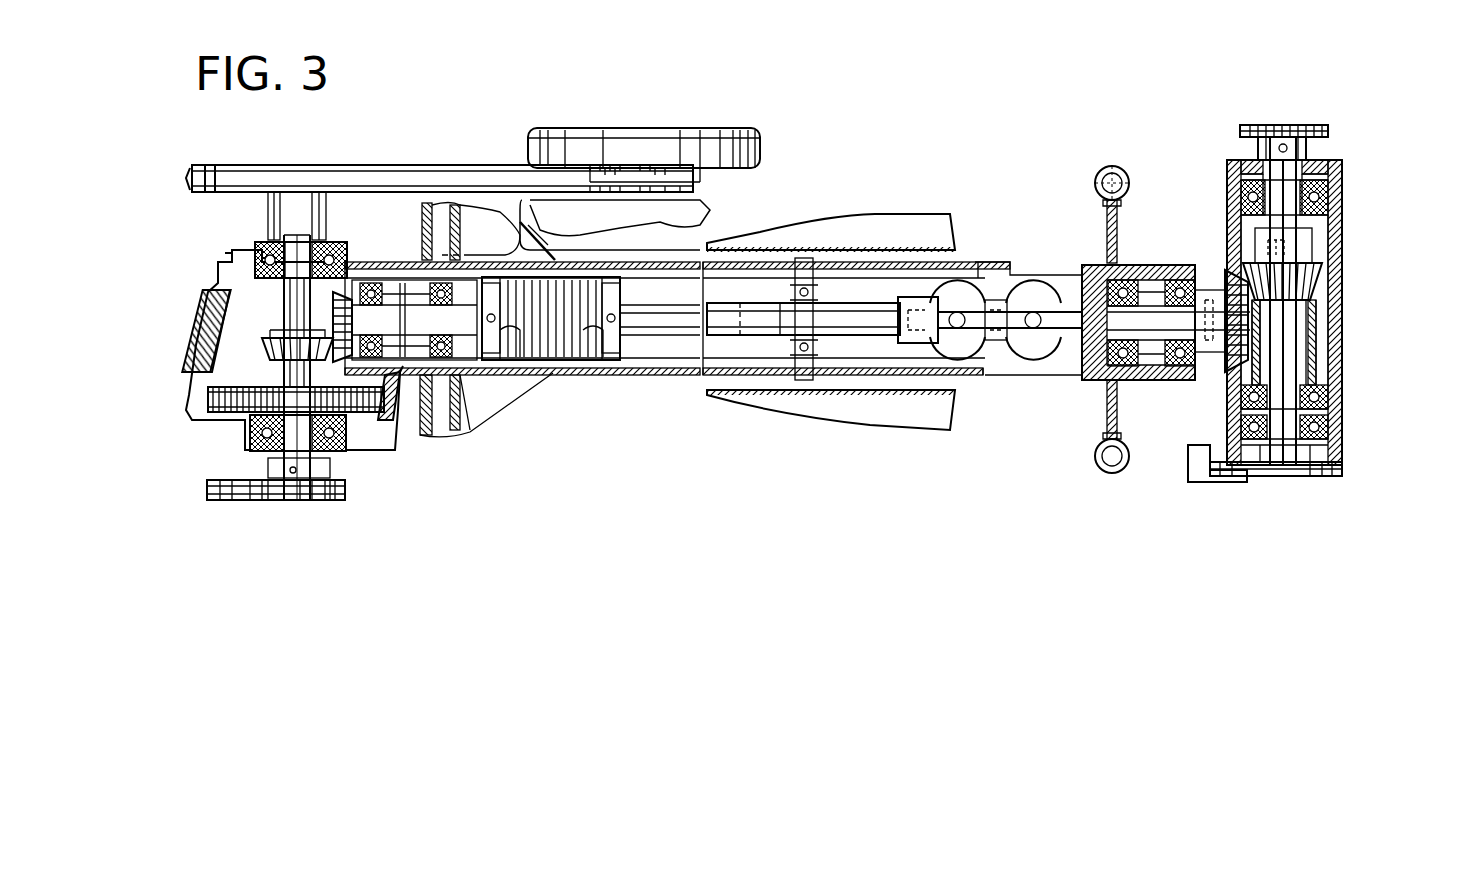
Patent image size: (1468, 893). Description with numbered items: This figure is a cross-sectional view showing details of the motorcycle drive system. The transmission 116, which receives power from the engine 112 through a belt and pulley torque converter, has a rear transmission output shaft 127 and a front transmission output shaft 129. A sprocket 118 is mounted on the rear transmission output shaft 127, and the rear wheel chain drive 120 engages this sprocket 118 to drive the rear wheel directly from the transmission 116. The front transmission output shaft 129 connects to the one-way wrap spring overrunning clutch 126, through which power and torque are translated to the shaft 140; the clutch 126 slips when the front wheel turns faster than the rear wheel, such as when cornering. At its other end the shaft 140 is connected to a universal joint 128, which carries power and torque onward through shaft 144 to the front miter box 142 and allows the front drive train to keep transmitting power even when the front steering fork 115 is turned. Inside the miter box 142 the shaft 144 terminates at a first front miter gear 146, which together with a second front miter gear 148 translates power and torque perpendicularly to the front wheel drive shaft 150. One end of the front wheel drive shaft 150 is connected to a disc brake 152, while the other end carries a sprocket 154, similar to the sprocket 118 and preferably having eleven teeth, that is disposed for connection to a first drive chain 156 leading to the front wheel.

The engine 112 is at (628, 148).
The front steering fork weldment 115 is at (1108, 166).
The transmission 116 is at (205, 333).
The sprocket 118 is at (302, 500).
The rear wheel chain drive 120 is at (212, 492).
The one-way wrap spring overrunning clutch 126 is at (548, 365).
The rear transmission output shaft 127 is at (297, 453).
The universal joint 128 is at (997, 350).
The front transmission output shaft 129 is at (395, 315).
The shaft 140 is at (848, 318).
The front miter box 142 is at (1345, 344).
The shaft 144 is at (1097, 318).
The first front miter gear 146 is at (1236, 385).
The second front miter gear 148 is at (1322, 295).
The front wheel drive shaft 150 is at (1305, 162).
The disc brake 152 is at (1270, 477).
The sprocket 154 is at (1328, 130).
The first drive chain 156 is at (1245, 125).